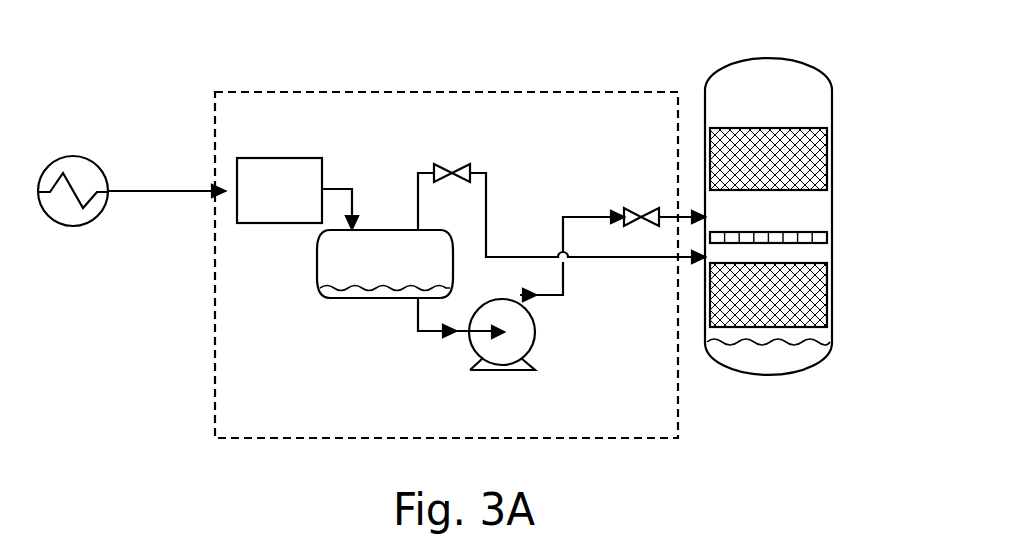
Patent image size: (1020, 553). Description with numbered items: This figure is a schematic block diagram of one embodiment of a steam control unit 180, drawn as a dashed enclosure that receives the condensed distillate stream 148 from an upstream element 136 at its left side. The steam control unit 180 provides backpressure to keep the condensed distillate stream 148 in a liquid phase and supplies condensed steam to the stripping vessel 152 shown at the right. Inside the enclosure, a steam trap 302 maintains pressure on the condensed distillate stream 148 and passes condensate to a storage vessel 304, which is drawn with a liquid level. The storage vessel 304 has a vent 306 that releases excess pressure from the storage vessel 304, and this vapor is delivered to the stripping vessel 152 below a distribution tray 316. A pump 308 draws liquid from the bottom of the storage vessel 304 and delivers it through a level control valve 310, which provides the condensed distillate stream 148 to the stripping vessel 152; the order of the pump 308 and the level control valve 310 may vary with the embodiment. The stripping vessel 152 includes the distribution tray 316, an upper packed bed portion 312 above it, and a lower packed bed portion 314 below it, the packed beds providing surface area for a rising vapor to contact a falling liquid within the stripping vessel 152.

The heat exchanger 136 is at (73, 152).
The condensed distillate stream 148 is at (161, 190).
The steam control unit 180 is at (243, 91).
The steam trap 302 is at (258, 200).
The storage vessel 304 is at (365, 271).
The vent 306 is at (437, 167).
The pump 308 is at (498, 372).
The level control valve 310 is at (630, 207).
The stripping vessel 152 is at (743, 106).
The upper packed bed portion 312 is at (832, 163).
The lower packed bed portion 314 is at (832, 297).
The distribution tray 316 is at (832, 240).